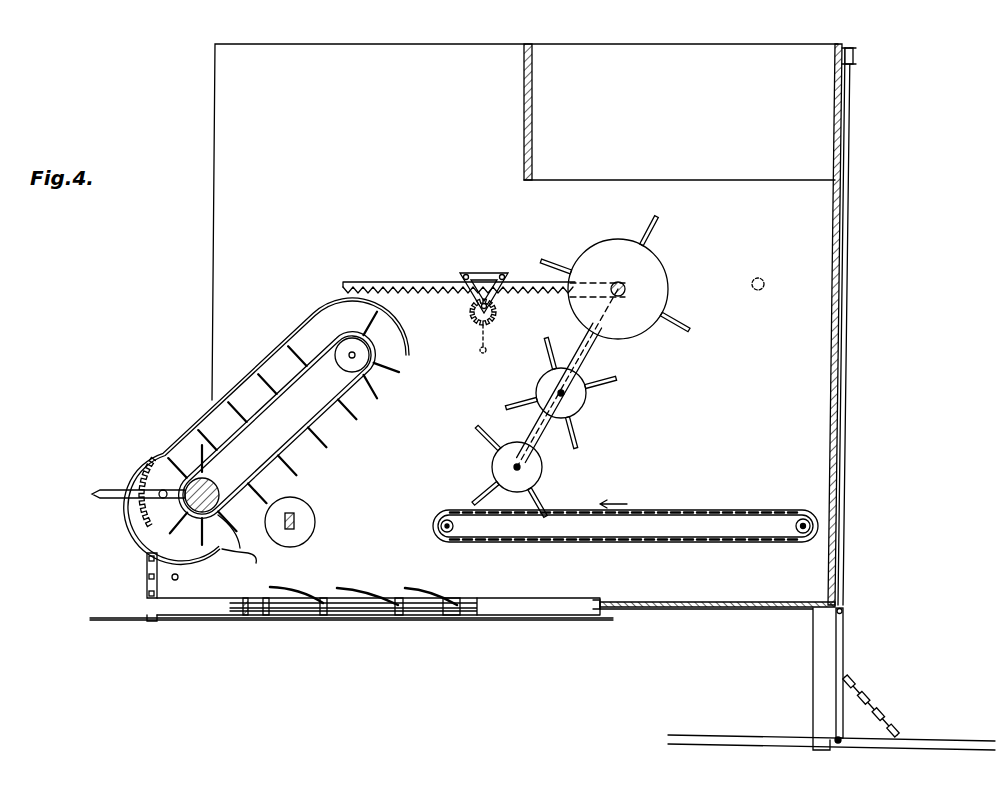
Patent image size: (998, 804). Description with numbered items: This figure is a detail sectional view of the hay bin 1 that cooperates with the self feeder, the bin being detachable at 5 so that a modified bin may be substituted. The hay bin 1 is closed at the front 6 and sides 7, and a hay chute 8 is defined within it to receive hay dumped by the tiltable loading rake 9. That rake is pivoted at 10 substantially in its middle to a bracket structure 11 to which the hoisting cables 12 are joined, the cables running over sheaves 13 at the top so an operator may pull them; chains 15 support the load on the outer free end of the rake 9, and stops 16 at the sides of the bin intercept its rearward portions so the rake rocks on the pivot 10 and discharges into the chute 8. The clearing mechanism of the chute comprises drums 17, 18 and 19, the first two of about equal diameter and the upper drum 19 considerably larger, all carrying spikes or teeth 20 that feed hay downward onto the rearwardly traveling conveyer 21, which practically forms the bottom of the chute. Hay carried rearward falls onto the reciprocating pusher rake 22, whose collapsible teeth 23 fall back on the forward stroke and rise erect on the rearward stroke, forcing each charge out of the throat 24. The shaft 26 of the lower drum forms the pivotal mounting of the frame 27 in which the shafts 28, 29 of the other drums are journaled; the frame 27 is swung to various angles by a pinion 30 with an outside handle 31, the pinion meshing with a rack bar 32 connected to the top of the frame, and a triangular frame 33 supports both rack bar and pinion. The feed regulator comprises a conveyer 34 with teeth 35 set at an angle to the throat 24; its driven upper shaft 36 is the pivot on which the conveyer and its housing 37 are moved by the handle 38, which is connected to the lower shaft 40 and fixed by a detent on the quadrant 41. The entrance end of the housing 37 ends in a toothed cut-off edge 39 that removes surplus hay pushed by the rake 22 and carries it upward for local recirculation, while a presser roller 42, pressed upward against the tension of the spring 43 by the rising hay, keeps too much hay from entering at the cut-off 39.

The hay bin 1 is at (497, 58).
The detachable connection 5 is at (146, 566).
The front 6 is at (832, 300).
The sides 7 is at (525, 205).
The hay chute 8 is at (728, 176).
The tiltable loading rake 9 is at (708, 738).
The pivot 10 is at (838, 744).
The bracket structure 11 is at (842, 645).
The hoisting cables 12 is at (844, 522).
The sheaves 13 is at (858, 56).
The chains 15 is at (860, 700).
The stops 16 is at (759, 278).
The lower drum 17 is at (503, 448).
The intermediate drum 18 is at (542, 378).
The upper drum 19 is at (608, 242).
The spikes or teeth 20 is at (550, 340).
The conveyer 21 is at (658, 512).
The reciprocating pusher rake 22 is at (312, 600).
The collapsible teeth 23 is at (400, 592).
The throat 24 is at (188, 580).
The shaft of lower drum 26 is at (517, 467).
The frame 27 is at (592, 350).
The shaft of intermediate drum 28 is at (561, 393).
The shaft of upper drum 29 is at (618, 289).
The pinion 30 is at (470, 310).
The handle 31 is at (478, 334).
The rack bar 32 is at (372, 282).
The triangular frame 33 is at (484, 272).
The conveyer 34 is at (305, 450).
The teeth 35 is at (340, 410).
The upper shaft 36 is at (352, 355).
The housing 37 is at (296, 333).
The handle 38 is at (112, 496).
The toothed cut-off edge 39 is at (243, 550).
The lower shaft 40 is at (240, 472).
The quadrant 41 is at (138, 522).
The presser roller 42 is at (296, 528).
The spring 43 is at (292, 510).